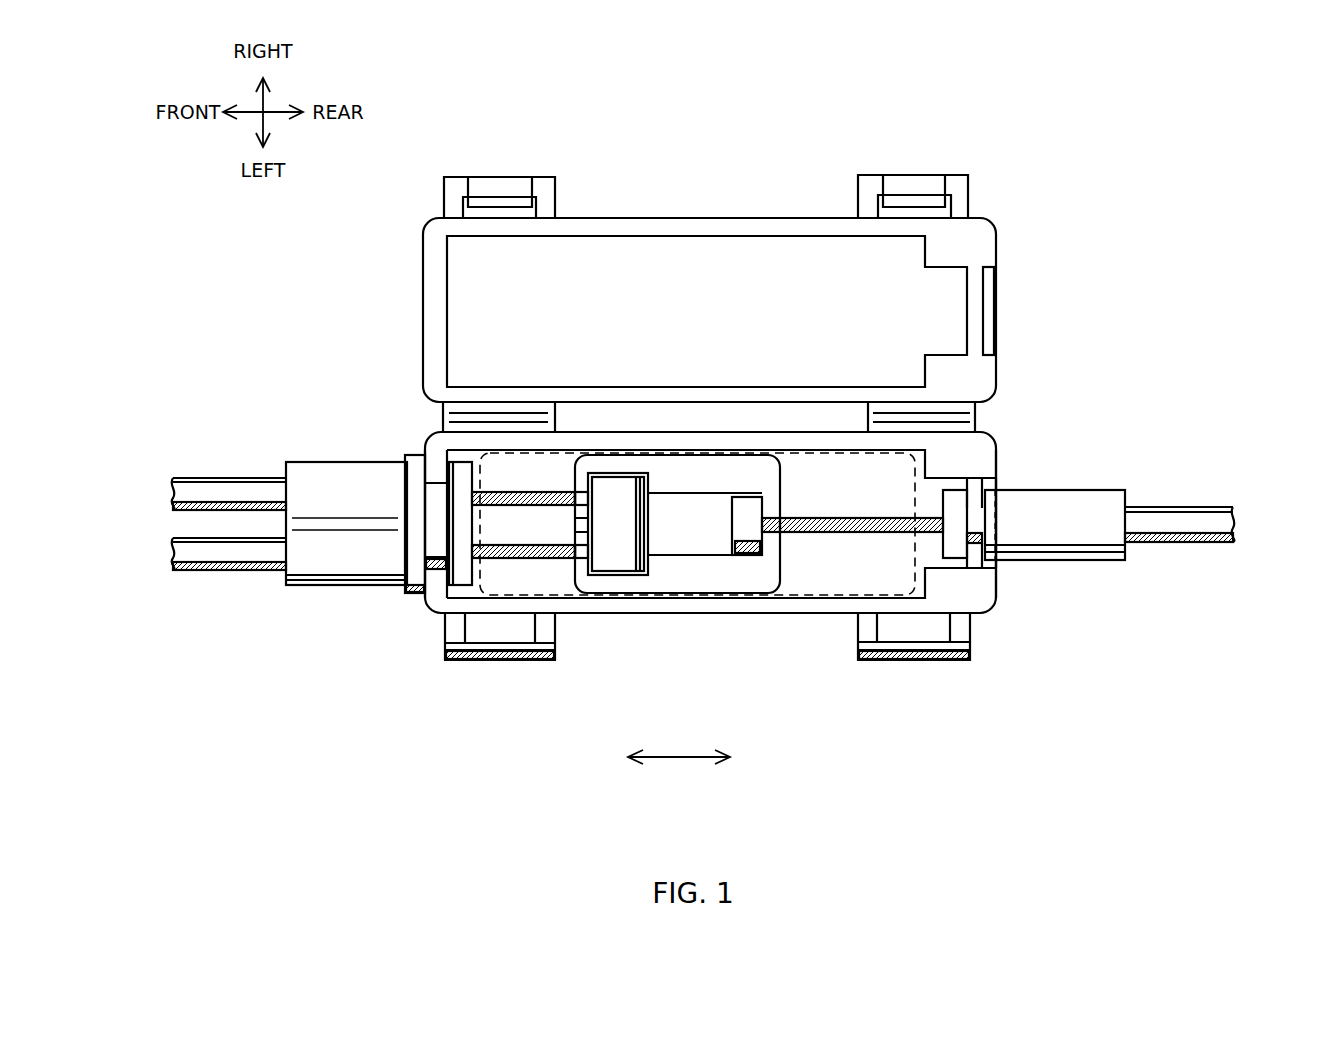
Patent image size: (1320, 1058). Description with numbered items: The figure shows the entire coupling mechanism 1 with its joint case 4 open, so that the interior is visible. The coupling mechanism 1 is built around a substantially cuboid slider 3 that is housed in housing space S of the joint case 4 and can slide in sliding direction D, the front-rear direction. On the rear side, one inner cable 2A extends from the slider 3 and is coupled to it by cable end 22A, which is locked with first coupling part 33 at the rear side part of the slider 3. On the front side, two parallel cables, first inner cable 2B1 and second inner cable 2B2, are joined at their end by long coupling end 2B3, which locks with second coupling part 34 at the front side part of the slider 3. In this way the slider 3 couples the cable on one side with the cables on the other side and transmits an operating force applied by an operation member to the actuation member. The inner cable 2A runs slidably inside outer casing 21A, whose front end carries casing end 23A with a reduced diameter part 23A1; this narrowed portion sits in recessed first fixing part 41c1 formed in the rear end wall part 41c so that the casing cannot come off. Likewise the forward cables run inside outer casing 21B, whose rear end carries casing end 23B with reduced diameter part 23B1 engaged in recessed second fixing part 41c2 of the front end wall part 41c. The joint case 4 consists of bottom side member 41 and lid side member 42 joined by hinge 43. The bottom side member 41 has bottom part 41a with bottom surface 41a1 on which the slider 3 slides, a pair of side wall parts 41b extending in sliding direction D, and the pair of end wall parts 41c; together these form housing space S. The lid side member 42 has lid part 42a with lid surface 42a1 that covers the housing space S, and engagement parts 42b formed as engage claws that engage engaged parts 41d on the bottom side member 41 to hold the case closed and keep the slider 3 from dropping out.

The coupling mechanism 1 is at (1034, 112).
The inner cable 2A is at (815, 518).
The first inner cable 2B1 is at (525, 558).
The second inner cable 2B2 is at (496, 492).
The coupling end 2B3 is at (614, 575).
The slider 3 is at (688, 450).
The joint case 4 is at (1098, 337).
The outer casing 21A is at (1192, 507).
The outer casing 21B is at (235, 478).
The cable end 22A is at (746, 556).
The casing end 23A is at (1113, 560).
The reduced diameter part 23A1 is at (976, 528).
The casing end 23B is at (310, 586).
The reduced diameter part 23B1 is at (432, 531).
The first coupling part 33 is at (790, 490).
The second coupling part 34 is at (560, 490).
The bottom side member 41 is at (735, 560).
The bottom part 41a is at (848, 614).
The bottom surface 41a1 is at (843, 580).
The side wall part 41b is at (774, 614).
The end wall part 41c is at (417, 613).
The first fixing part 41c1 is at (987, 502).
The second fixing part 41c2 is at (446, 485).
The engaged part 41d is at (462, 661).
The lid side member 42 is at (753, 257).
The lid part 42a is at (748, 252).
The lid surface 42a1 is at (748, 328).
The engagement part 42b is at (501, 177).
The hinge 43 is at (984, 418).
The housing space S is at (824, 565).
The sliding direction D is at (678, 759).